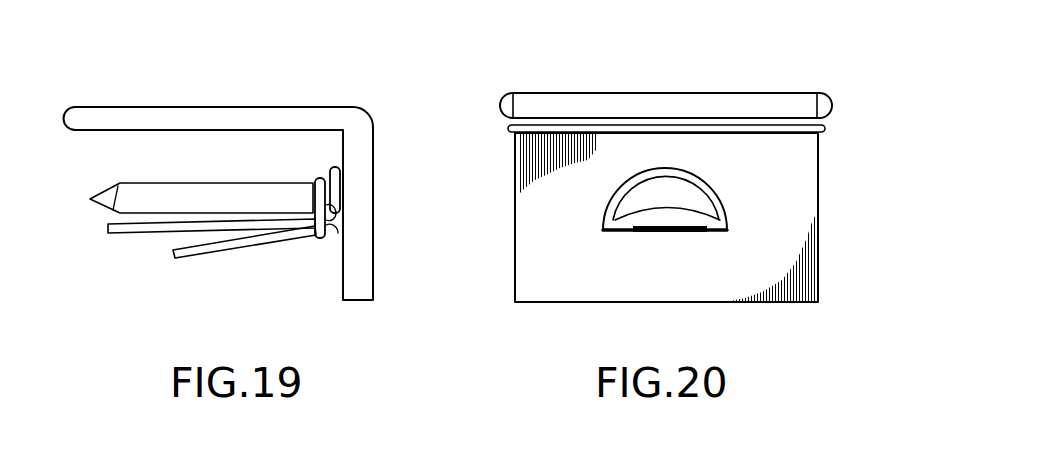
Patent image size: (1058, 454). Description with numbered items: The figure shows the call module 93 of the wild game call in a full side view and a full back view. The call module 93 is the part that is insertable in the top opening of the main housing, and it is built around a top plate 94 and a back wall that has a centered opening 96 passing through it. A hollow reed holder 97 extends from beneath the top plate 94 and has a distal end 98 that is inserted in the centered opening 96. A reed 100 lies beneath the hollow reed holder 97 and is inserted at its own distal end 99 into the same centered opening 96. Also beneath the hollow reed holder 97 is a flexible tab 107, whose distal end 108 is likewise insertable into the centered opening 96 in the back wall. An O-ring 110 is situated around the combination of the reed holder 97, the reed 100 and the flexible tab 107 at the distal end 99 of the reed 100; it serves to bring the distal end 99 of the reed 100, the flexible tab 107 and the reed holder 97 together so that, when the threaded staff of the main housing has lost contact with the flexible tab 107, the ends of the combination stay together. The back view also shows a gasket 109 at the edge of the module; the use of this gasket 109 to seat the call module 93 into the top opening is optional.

In FIG. 19, the call module 93 is at (380, 138).
In FIG. 20, the call module 93 is at (838, 152).
In FIG. 19, the top plate 94 is at (154, 107).
In FIG. 20, the top plate 94 is at (643, 108).
In FIG. 20, the centered opening 96 is at (686, 196).
In FIG. 19, the hollow reed holder 97 is at (113, 184).
In FIG. 20, the hollow reed holder 97 is at (722, 216).
In FIG. 19, the distal end of the hollow reed holder 98 is at (333, 179).
In FIG. 19, the distal end of the reed 99 is at (336, 214).
In FIG. 19, the reed 100 is at (137, 234).
In FIG. 20, the reed 100 is at (720, 227).
In FIG. 19, the flexible tab 107 is at (241, 250).
In FIG. 20, the flexible tab 107 is at (657, 232).
In FIG. 19, the distal end of the flexible tab 108 is at (342, 233).
In FIG. 20, the gasket 109 is at (523, 136).
In FIG. 19, the O-ring 110 is at (316, 180).